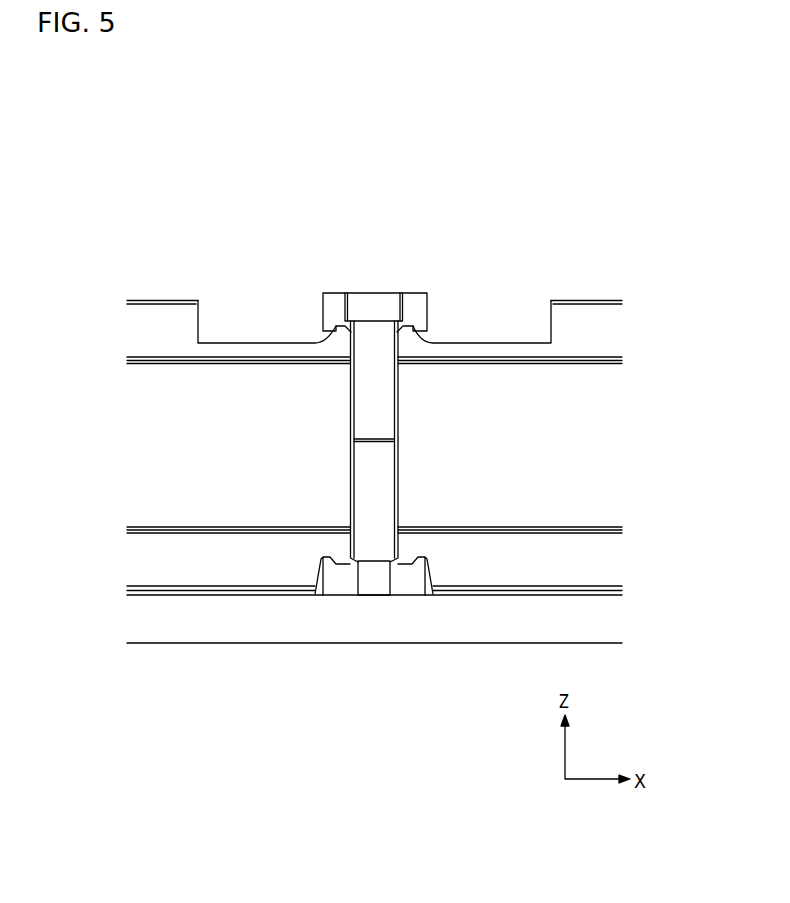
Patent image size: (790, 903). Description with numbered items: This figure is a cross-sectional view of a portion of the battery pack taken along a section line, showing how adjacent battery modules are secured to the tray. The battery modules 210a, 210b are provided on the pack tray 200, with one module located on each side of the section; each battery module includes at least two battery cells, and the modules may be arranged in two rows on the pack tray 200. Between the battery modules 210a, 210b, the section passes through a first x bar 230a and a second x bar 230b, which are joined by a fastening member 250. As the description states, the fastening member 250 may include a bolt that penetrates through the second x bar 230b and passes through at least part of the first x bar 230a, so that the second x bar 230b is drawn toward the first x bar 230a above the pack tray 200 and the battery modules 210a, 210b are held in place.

The pack tray 200 is at (275, 625).
The battery module 210a is at (160, 451).
The battery module 210b is at (585, 455).
The first x bar 230a is at (410, 577).
The second x bar 230b is at (417, 298).
The fastening member 250 is at (370, 298).